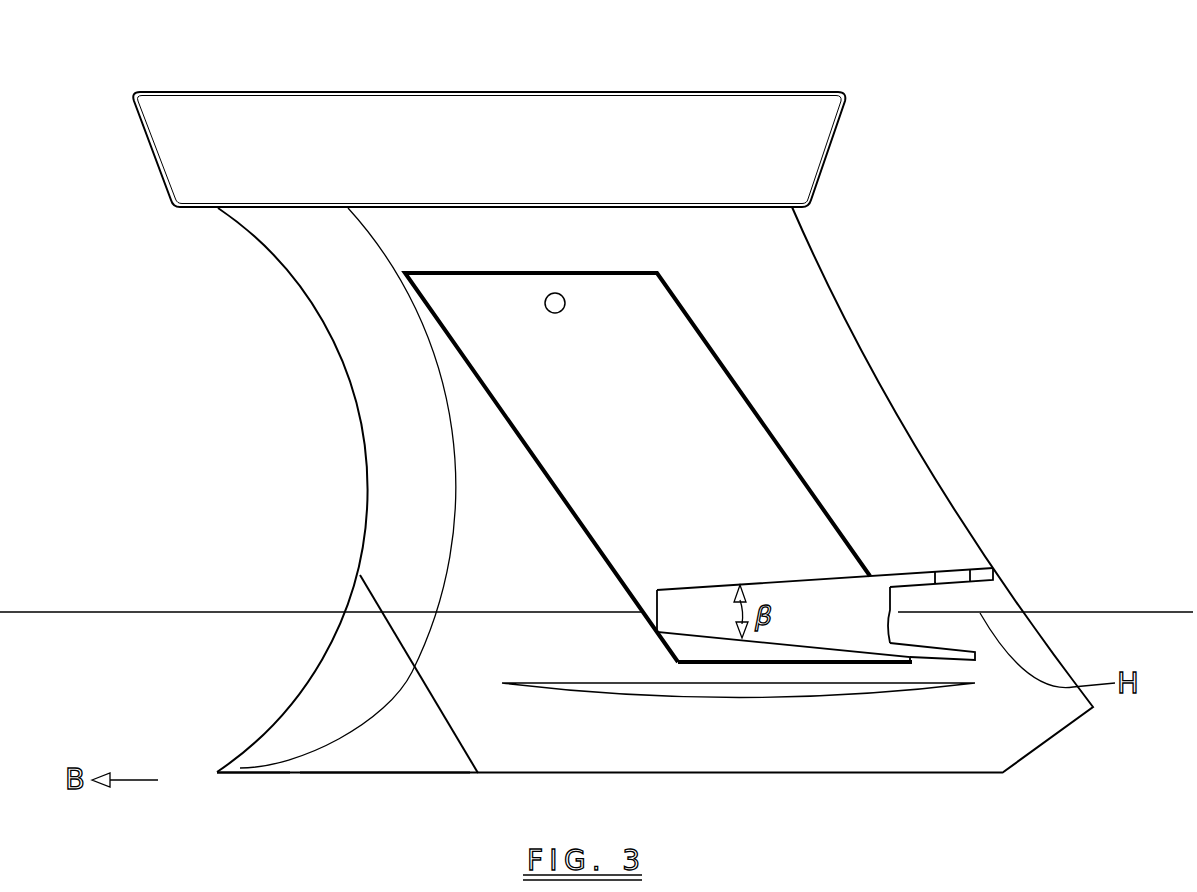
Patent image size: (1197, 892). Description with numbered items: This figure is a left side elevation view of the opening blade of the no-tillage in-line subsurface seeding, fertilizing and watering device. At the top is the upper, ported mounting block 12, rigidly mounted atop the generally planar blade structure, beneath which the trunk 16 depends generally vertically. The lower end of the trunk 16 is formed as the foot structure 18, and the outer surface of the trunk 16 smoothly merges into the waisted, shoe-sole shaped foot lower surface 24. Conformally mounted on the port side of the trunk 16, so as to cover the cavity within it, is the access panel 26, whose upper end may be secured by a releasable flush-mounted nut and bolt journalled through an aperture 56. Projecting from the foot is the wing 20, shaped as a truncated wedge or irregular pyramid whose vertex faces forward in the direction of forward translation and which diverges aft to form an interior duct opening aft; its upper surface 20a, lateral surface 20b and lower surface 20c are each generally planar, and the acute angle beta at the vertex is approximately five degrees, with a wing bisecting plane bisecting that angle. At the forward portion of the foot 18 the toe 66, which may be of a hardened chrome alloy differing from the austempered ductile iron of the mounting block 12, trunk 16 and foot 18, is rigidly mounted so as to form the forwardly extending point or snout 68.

The mounting block 12 is at (825, 143).
The trunk 16 is at (1030, 407).
The foot structure 18 is at (1060, 640).
The wing 20 is at (913, 658).
The upper surface of wing 20a is at (993, 572).
The lateral surface of wing 20b is at (832, 620).
The lower surface of wing 20c is at (935, 645).
The foot lower surface 24 is at (1002, 773).
The access panel 26 is at (666, 456).
The aperture 56 is at (545, 295).
The toe 66 is at (378, 773).
The snout 68 is at (217, 772).